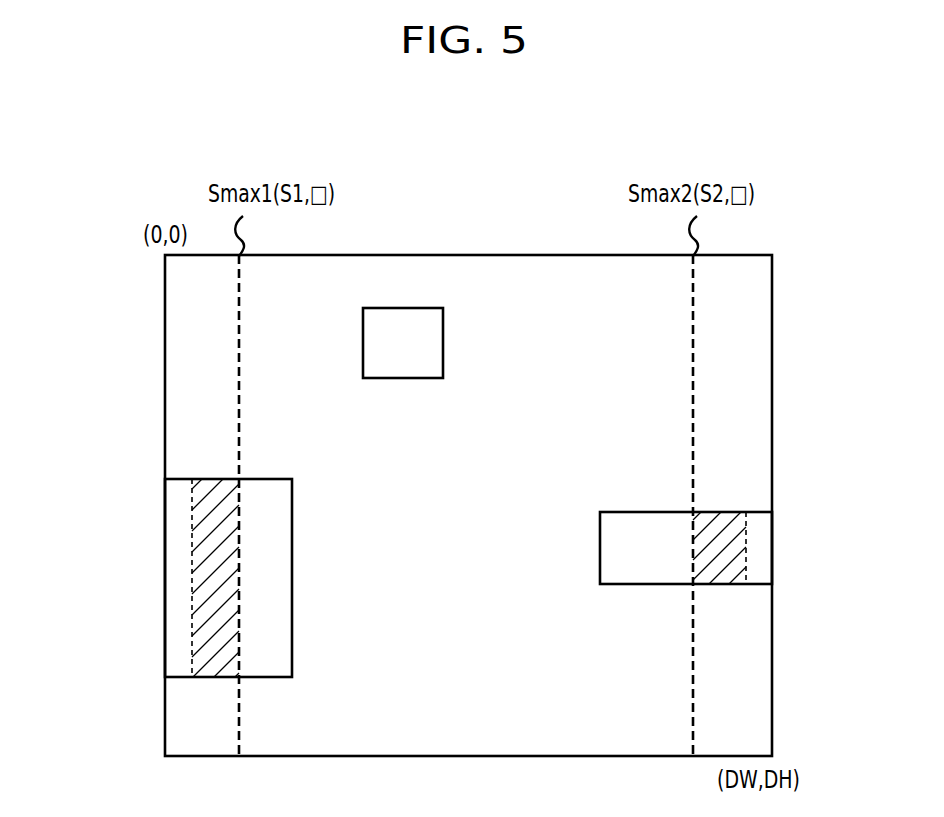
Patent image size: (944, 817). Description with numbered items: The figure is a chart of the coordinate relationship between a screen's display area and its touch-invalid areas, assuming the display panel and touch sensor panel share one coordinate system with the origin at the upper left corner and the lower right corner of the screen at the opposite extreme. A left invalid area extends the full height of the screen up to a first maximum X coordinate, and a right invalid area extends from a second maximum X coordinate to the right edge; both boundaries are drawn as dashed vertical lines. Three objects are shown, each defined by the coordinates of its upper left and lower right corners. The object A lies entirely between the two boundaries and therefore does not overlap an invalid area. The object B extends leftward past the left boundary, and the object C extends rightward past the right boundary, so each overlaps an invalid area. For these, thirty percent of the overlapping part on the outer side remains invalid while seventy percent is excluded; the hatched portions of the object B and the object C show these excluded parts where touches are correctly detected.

The object A is at (407, 342).
The object B is at (208, 580).
The object C is at (722, 547).